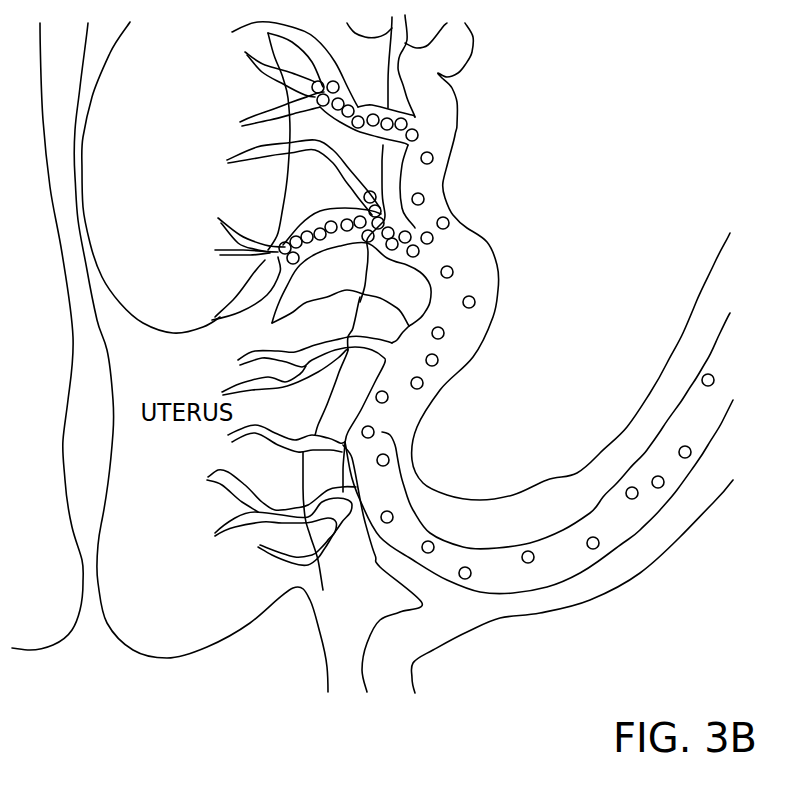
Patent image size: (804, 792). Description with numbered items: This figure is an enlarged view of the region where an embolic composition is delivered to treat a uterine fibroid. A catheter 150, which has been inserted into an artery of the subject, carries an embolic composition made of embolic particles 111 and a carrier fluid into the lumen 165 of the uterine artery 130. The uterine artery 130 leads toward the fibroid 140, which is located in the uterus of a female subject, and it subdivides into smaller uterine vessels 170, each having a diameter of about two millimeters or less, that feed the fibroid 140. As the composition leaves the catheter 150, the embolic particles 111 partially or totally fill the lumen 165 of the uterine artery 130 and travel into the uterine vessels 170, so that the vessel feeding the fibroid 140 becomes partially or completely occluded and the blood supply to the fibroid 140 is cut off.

The fibroid 140 is at (155, 208).
The embolic particles 111 is at (433, 162).
The uterine artery 130 is at (498, 300).
The uterine vessels 170 is at (298, 243).
The catheter 150 is at (547, 588).
The lumen 165 is at (622, 513).